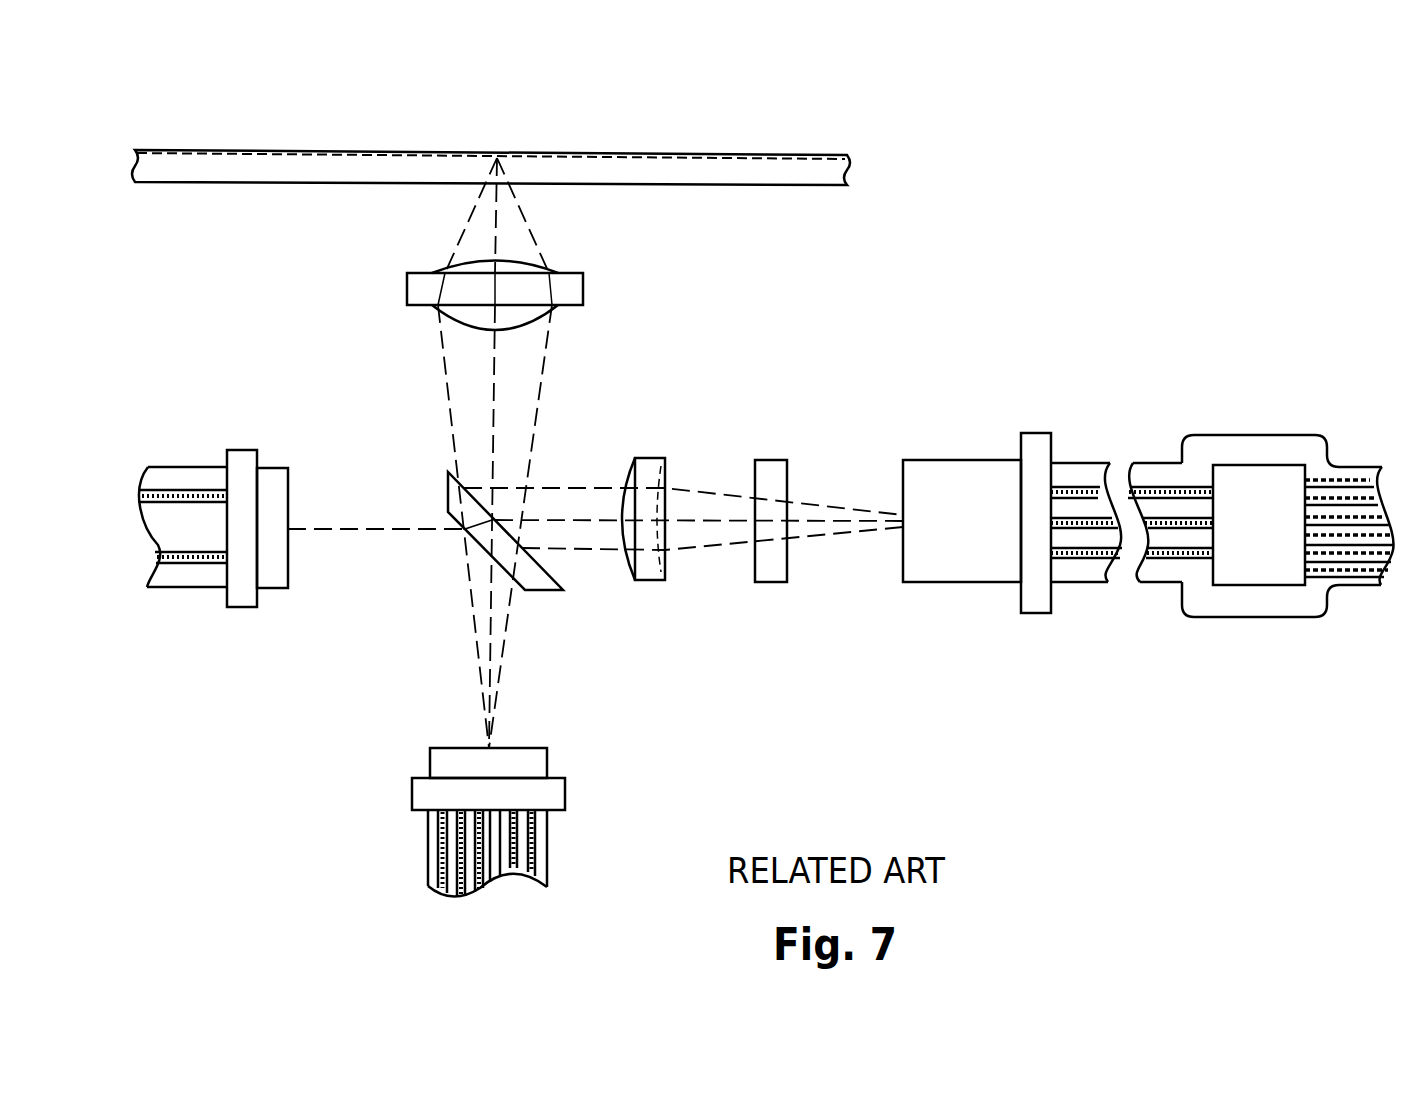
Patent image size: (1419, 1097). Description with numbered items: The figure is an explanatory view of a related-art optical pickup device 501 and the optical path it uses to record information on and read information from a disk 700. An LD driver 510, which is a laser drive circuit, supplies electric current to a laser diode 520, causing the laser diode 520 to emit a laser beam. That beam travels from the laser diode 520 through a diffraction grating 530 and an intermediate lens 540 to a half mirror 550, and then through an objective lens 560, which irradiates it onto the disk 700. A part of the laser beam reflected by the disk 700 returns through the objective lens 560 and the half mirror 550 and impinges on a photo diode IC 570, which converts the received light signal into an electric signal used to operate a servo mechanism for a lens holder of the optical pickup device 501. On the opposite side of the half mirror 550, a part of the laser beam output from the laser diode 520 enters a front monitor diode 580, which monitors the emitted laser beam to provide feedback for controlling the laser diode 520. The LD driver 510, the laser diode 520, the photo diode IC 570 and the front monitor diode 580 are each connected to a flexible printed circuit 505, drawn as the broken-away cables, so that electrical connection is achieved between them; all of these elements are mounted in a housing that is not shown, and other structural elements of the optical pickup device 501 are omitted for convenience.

The optical pickup device 501 is at (1082, 278).
The flexible printed circuit 505 is at (190, 590).
The LD driver 510 is at (1258, 465).
The laser diode 520 is at (962, 460).
The diffraction grating 530 is at (773, 460).
The intermediate lens 540 is at (648, 458).
The half mirror 550 is at (448, 492).
The objective lens 560 is at (583, 290).
The photo diode IC 570 is at (565, 797).
The front monitor diode 580 is at (241, 450).
The disk 700 is at (672, 150).